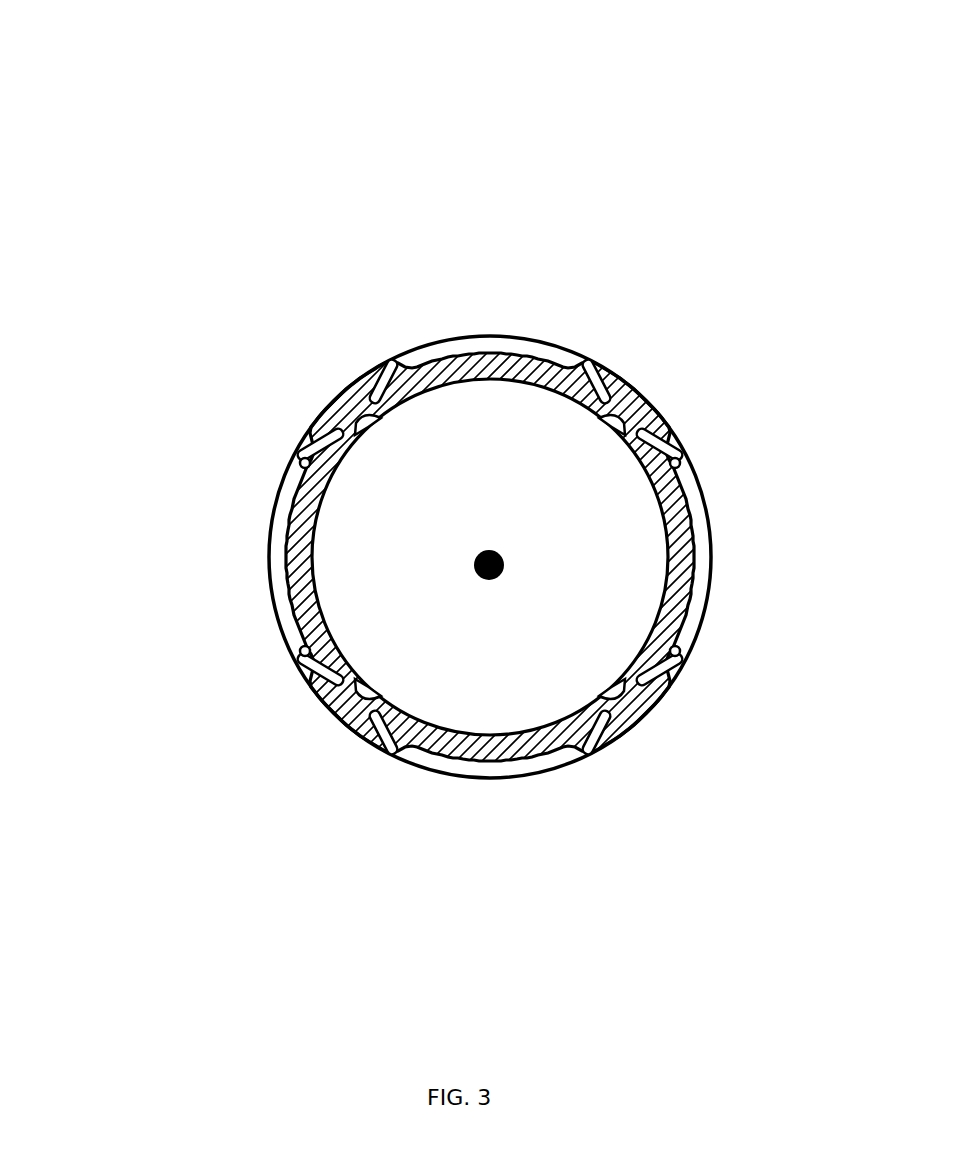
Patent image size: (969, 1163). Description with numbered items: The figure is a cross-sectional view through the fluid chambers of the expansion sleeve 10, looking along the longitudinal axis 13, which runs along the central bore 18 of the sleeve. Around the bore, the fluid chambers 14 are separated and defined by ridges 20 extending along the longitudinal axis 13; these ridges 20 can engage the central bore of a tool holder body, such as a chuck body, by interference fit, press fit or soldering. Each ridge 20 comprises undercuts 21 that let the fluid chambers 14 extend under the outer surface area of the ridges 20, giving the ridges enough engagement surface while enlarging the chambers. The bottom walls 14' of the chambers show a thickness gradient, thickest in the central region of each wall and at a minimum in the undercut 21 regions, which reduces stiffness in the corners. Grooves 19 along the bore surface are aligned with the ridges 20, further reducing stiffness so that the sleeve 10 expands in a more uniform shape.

The expansion sleeve 10 is at (172, 88).
The fluid chambers 14 is at (492, 555).
The bottom walls 14' is at (484, 557).
The longitudinal axis 13 is at (480, 545).
The bore 18 is at (480, 545).
The grooves 19 is at (612, 692).
The ridges 20 is at (339, 399).
The undercuts 21 is at (695, 465).